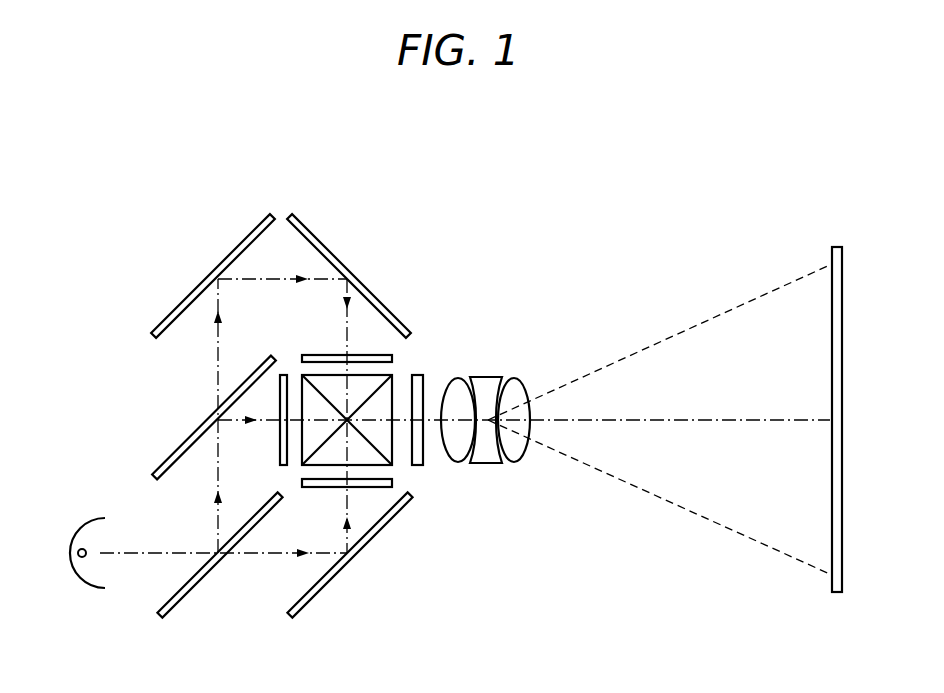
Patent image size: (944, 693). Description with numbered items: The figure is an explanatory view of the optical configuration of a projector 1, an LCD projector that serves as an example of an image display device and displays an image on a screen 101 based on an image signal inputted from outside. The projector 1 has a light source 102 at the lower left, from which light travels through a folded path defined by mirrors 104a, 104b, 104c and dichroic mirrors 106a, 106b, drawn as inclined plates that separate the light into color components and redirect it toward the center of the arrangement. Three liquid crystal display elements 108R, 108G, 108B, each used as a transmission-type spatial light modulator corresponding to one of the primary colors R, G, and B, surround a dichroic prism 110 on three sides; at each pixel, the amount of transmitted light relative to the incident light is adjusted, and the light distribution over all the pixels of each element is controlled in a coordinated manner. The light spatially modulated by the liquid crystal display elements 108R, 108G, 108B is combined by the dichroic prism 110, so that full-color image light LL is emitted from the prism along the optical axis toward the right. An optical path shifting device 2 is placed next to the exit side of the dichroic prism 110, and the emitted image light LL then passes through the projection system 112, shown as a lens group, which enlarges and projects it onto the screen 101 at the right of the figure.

The projector 1 is at (708, 192).
The screen 101 is at (837, 592).
The light source 102 is at (87, 587).
The mirror 104a is at (318, 593).
The mirror 104b is at (230, 250).
The mirror 104c is at (332, 248).
The dichroic mirror 106a is at (188, 593).
The dichroic mirror 106b is at (172, 450).
The liquid crystal display element 108R is at (325, 488).
The liquid crystal display element 108G is at (278, 436).
The liquid crystal display element 108B is at (397, 358).
The dichroic prism 110 is at (397, 378).
The projection system 112 is at (528, 468).
The optical path shifting device 2 is at (427, 450).
The image light LL is at (398, 422).